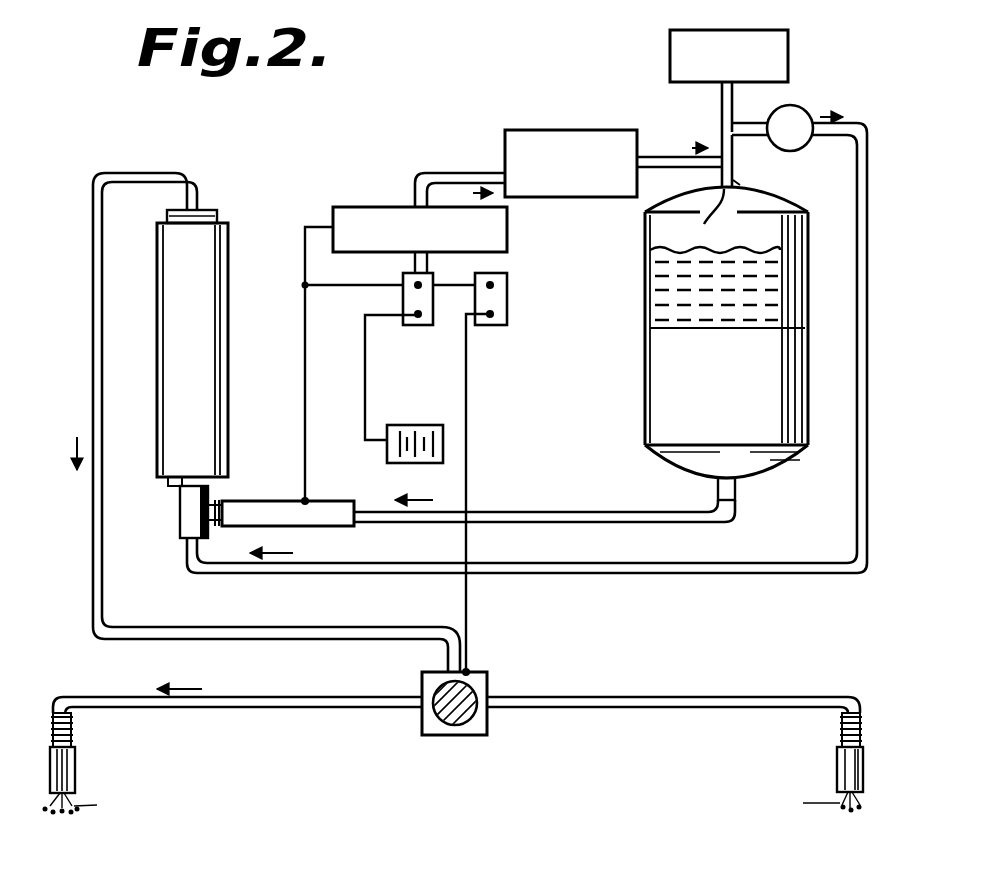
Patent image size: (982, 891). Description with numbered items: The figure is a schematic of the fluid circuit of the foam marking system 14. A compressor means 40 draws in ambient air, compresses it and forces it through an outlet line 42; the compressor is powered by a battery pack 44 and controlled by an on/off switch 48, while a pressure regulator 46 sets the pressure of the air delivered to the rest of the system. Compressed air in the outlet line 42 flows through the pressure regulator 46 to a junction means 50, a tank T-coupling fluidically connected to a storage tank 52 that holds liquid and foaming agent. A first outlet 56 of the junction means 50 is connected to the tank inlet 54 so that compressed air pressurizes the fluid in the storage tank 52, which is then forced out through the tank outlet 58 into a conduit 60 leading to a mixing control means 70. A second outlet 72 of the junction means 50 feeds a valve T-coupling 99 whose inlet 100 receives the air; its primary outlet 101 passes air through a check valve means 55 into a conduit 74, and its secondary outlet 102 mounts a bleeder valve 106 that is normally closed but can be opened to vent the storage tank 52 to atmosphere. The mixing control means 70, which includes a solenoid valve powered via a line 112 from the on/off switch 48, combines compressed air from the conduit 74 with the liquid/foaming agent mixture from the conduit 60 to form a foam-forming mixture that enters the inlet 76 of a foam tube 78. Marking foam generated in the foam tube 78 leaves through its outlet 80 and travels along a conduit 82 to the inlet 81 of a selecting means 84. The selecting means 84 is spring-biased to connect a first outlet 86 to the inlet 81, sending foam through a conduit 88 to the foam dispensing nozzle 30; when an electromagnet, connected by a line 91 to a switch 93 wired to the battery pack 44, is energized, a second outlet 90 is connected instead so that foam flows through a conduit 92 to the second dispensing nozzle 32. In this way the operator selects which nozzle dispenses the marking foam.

The marking system 14 is at (424, 155).
The foam dispensing nozzle 30 is at (73, 773).
The second marking dispensing nozzle 32 is at (845, 765).
The compressor means 40 is at (370, 201).
The outlet line 42 is at (413, 198).
The battery pack 44 is at (407, 428).
The pressure regulator 46 is at (528, 130).
The on/off switch 48 is at (415, 318).
The junction means 50 is at (738, 171).
The storage tank 52 is at (668, 385).
The inlet 54 is at (717, 213).
The check valve means 55 is at (812, 141).
The first outlet 56 is at (735, 183).
The outlet 58 is at (737, 497).
The conduit 60 is at (535, 522).
The mixing control means 70 is at (237, 501).
The second outlet 72 is at (719, 148).
The conduit 74 is at (857, 300).
The inlet 76 is at (180, 487).
The foam tube 78 is at (170, 333).
The outlet 80 is at (204, 212).
The inlet 81 is at (452, 677).
The conduit 82 is at (93, 528).
The selecting means 84 is at (482, 687).
The first outlet 86 is at (430, 705).
The conduit 88 is at (308, 705).
The second outlet 90 is at (478, 717).
The line 91 is at (467, 452).
The conduit 92 is at (628, 707).
The switch 93 is at (495, 323).
The valve T-coupling 99 is at (720, 110).
The inlet 100 is at (735, 142).
The primary outlet 101 is at (754, 122).
The secondary outlet 102 is at (720, 92).
The bleeder valve 106 is at (788, 31).
The line 112 is at (308, 403).